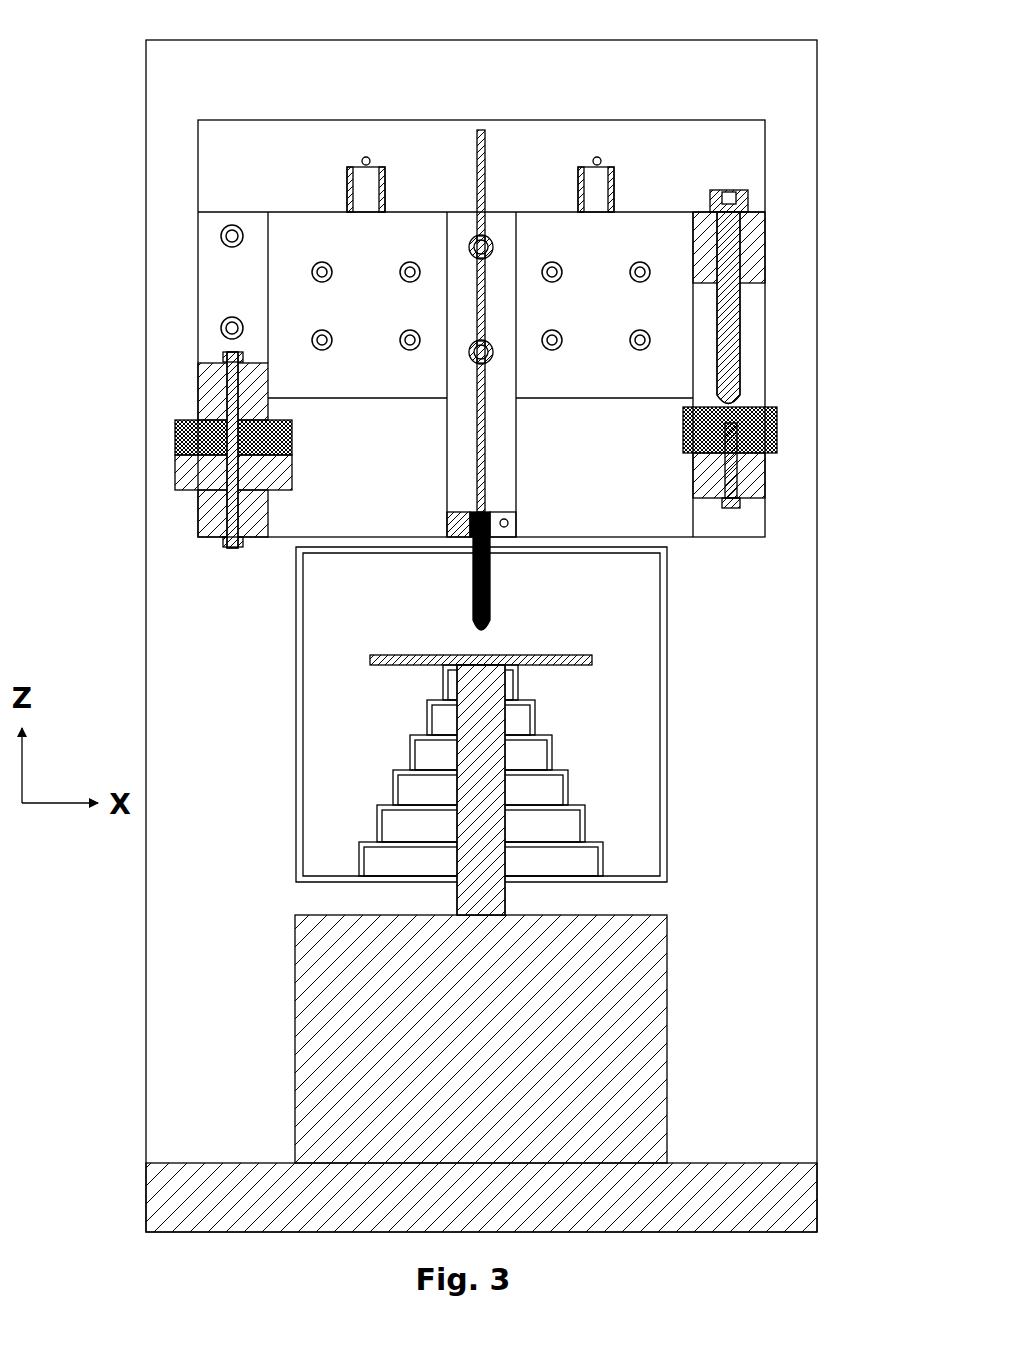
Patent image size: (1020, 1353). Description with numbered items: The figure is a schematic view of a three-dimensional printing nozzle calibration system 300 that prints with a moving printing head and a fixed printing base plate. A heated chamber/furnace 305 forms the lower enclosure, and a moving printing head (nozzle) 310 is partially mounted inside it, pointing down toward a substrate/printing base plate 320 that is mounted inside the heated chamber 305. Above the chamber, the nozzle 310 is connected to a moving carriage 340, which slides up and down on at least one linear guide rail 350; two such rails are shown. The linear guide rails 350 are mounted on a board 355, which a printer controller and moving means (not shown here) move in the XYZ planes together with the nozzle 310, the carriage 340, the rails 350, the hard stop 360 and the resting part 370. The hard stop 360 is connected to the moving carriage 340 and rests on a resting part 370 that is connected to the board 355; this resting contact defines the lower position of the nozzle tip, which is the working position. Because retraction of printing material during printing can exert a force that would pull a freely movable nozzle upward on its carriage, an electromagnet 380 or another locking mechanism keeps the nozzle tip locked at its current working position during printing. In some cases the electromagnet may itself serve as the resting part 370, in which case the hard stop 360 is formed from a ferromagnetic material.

The 3D printing nozzle calibration system 300 is at (769, 86).
The heated chamber/furnace 305 is at (667, 742).
The moving printing head (nozzle) 310 is at (493, 606).
The substrate/printing base plate 320 is at (592, 660).
The moving carriage 340 is at (498, 235).
The linear guide rail 350 is at (367, 180).
The board 355 is at (765, 159).
The hard stop 360 is at (743, 367).
The resting part 370 is at (777, 432).
The electromagnet 380 is at (158, 443).